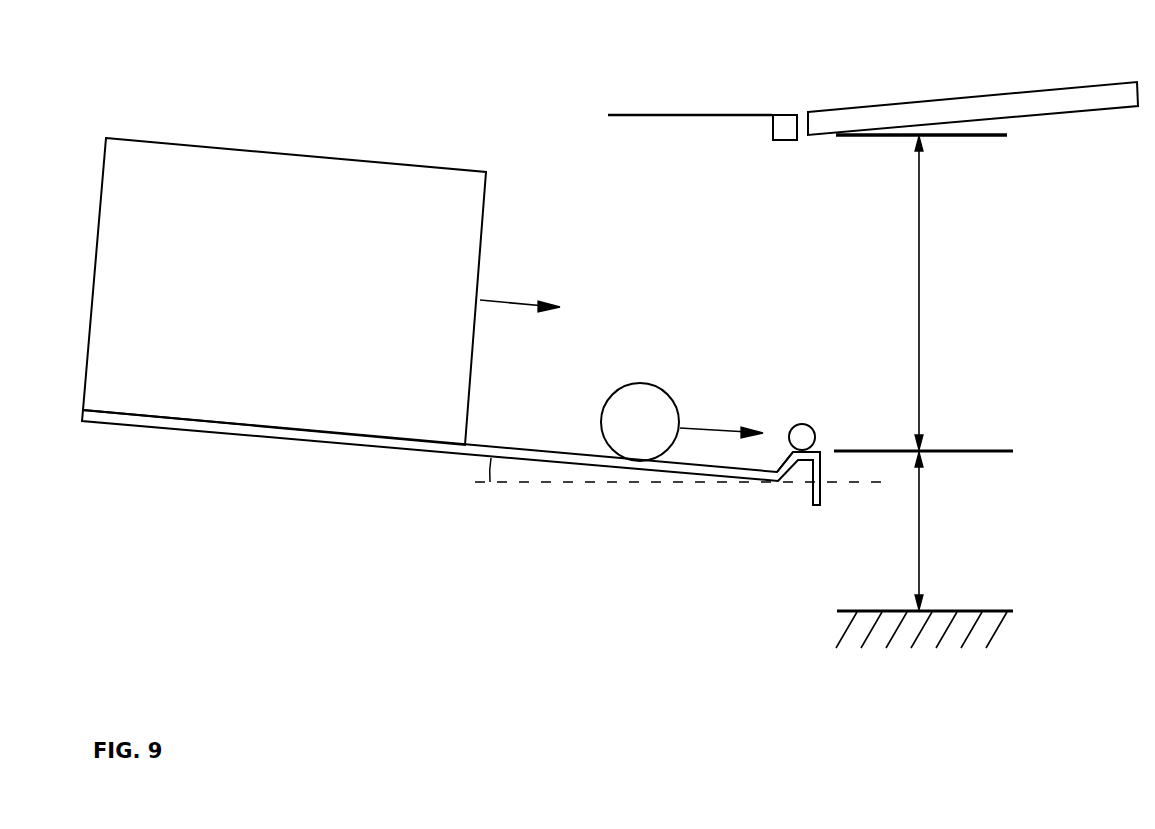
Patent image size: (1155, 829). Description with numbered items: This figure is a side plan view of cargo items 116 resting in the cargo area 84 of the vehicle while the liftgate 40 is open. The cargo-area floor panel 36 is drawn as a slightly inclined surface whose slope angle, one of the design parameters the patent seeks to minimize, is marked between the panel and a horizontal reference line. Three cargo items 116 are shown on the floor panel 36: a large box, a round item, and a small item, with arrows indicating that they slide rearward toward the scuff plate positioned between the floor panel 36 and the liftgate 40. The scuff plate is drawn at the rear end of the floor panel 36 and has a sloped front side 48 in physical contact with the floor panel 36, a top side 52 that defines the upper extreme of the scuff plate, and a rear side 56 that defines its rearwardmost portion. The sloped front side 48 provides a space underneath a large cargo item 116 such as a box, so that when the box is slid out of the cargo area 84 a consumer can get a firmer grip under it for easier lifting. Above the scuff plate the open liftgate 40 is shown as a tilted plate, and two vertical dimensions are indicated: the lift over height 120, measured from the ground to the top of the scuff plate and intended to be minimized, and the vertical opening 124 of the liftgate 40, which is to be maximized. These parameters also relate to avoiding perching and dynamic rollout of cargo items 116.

The cargo-area floor panel 36 is at (555, 453).
The cargo items 116 is at (310, 156).
The cargo area 84 is at (552, 112).
The liftgate 40 is at (982, 100).
The sloped front side 48 is at (785, 456).
The top side 52 is at (817, 448).
The rear side 56 is at (823, 473).
The vertical opening 124 is at (921, 291).
The lift over height 120 is at (921, 529).